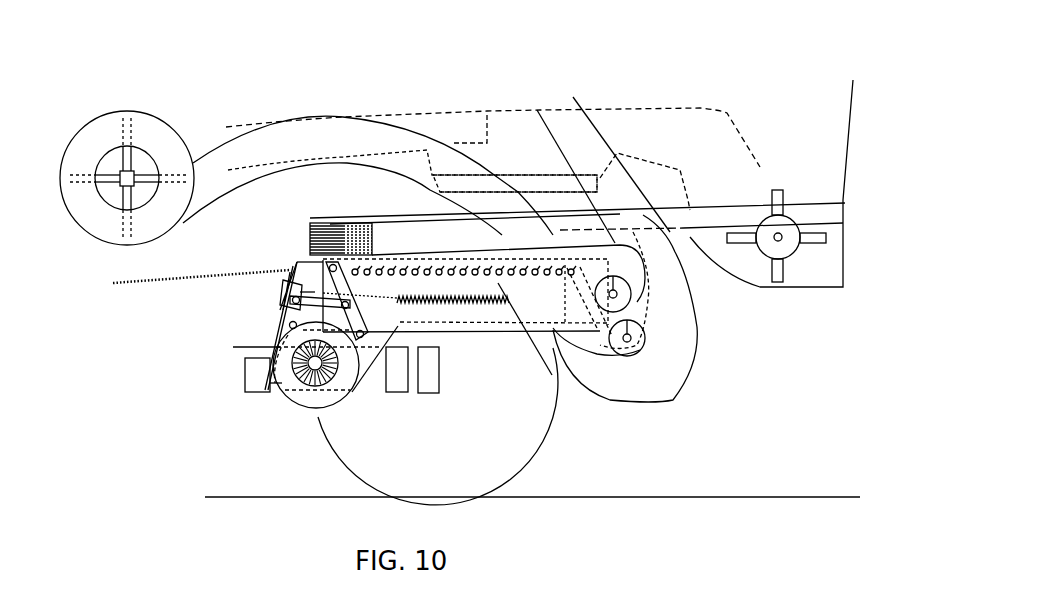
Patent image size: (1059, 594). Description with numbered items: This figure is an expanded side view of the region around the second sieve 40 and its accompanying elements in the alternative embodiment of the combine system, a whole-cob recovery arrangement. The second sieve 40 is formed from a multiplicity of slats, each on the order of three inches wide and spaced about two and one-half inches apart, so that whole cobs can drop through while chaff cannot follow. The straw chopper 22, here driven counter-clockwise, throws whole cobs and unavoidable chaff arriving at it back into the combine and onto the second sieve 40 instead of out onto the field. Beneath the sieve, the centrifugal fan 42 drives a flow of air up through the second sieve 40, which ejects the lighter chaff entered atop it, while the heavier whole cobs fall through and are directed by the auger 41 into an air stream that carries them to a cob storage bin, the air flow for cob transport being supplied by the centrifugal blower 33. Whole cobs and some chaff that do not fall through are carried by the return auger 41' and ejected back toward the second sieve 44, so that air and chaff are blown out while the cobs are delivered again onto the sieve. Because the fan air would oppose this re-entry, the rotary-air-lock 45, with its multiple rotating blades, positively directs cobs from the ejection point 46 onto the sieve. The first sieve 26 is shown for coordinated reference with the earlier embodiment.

The straw chopper 22 is at (797, 221).
The first sieve 26 is at (218, 287).
The centrifugal blower 33 is at (95, 209).
The second sieve 40 is at (552, 350).
The auger 41 is at (699, 371).
The return auger 41' is at (697, 313).
The centrifugal fan 42 is at (288, 385).
The second sieve 44 is at (423, 233).
The rotary-air-lock 45 is at (520, 173).
The ejection point 46 is at (309, 238).